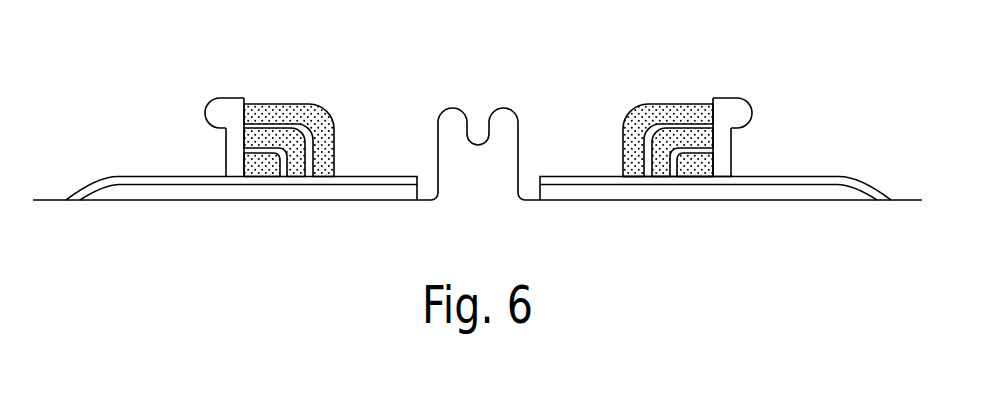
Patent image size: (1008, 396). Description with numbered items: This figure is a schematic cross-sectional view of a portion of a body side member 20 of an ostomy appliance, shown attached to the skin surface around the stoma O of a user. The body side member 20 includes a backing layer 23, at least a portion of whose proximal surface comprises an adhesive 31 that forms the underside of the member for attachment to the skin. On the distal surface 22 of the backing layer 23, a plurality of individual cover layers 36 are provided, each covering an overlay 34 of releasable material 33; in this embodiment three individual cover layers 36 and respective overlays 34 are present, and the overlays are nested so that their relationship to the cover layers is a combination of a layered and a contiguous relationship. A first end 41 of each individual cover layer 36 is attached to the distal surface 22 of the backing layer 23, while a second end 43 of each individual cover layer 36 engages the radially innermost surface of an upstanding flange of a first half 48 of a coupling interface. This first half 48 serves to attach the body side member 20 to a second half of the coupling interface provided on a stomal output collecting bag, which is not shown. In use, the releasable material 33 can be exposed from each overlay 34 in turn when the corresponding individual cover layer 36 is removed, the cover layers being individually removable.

The body side member 20 is at (167, 77).
The stoma O is at (504, 122).
The adhesive 31 is at (288, 190).
The distal surface 22 is at (838, 177).
The backing layer 23 is at (115, 177).
The individual cover layer 36 is at (282, 104).
The overlay 34 is at (640, 130).
The releasable material 33 is at (637, 150).
The first end 41 is at (627, 170).
The second end 43 is at (711, 102).
The first half of coupling interface 48 is at (737, 109).